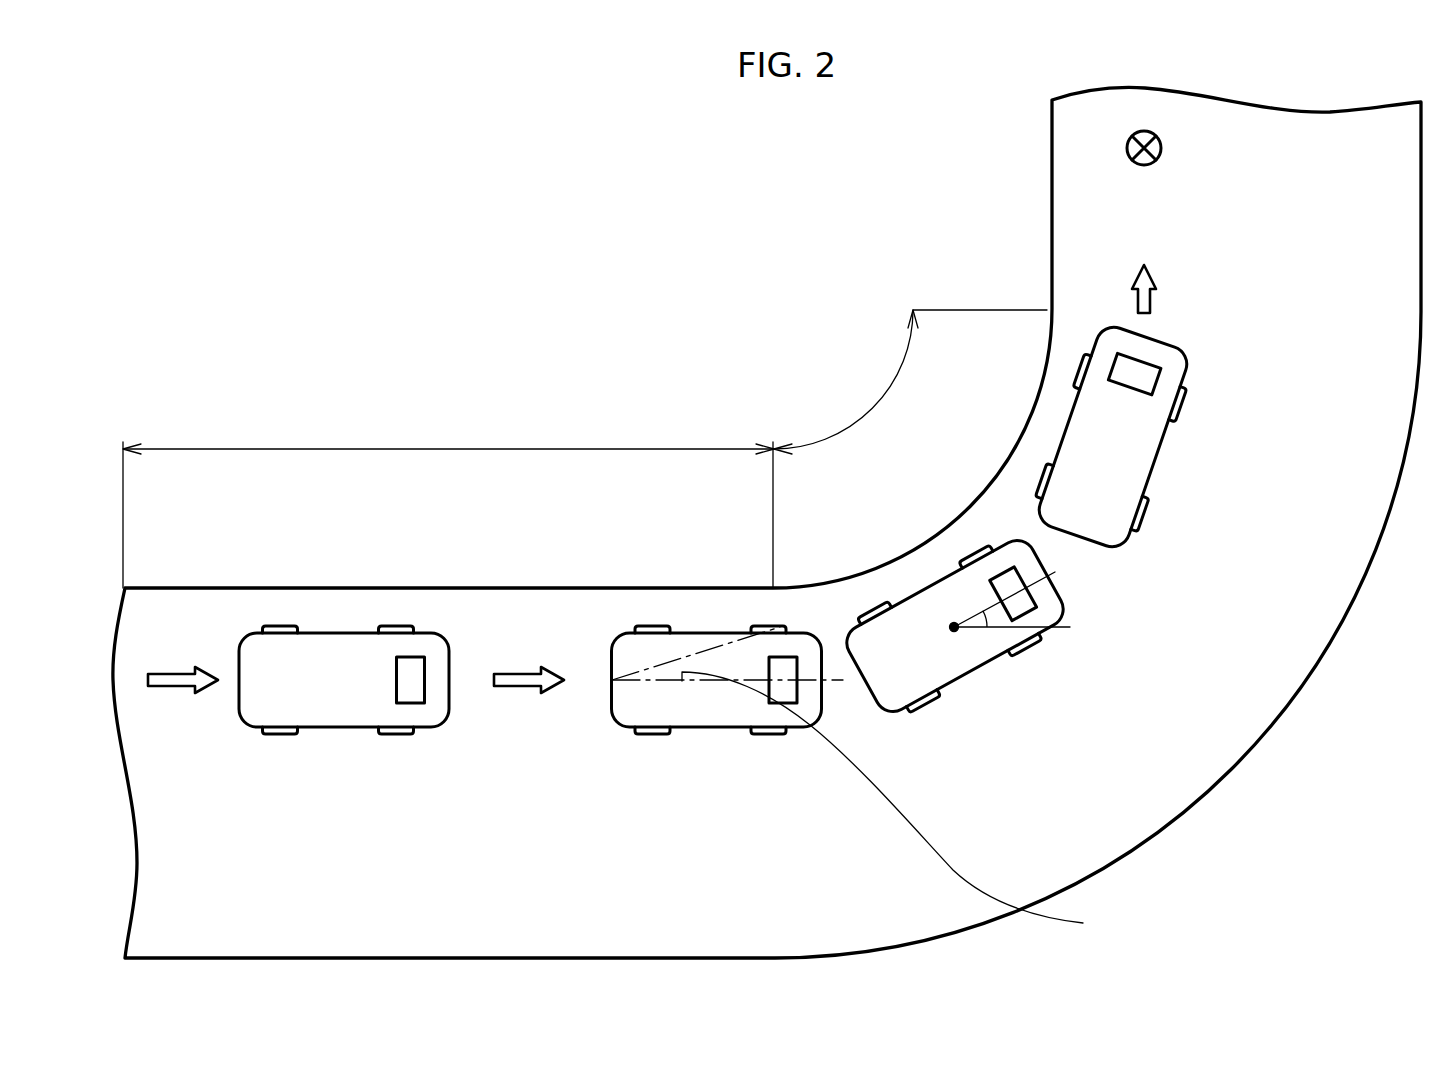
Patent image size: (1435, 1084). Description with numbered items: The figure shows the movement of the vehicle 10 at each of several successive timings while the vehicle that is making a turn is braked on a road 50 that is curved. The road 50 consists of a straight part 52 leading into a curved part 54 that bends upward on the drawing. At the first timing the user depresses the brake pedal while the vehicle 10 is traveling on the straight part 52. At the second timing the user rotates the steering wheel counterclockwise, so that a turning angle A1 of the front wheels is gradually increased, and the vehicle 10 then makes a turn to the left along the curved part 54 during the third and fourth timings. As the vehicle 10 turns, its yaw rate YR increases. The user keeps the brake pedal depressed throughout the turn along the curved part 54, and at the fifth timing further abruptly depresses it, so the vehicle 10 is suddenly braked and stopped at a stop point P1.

The vehicle 10 is at (345, 647).
The road 50 is at (1167, 807).
The straight part 52 is at (448, 502).
The curved part 54 is at (910, 382).
The stop point P1 is at (1127, 148).
The turning angle A1 is at (909, 805).
The yaw rate YR is at (985, 614).